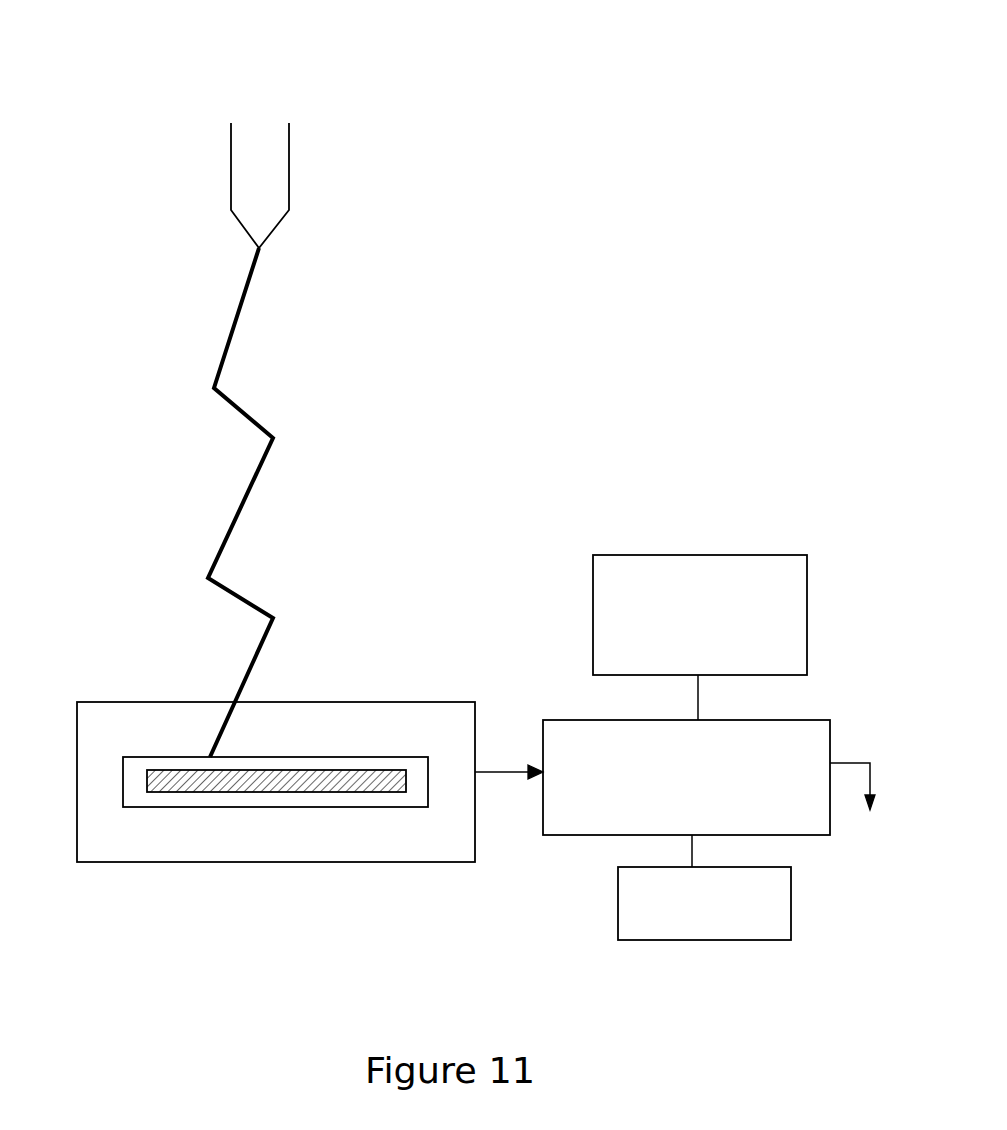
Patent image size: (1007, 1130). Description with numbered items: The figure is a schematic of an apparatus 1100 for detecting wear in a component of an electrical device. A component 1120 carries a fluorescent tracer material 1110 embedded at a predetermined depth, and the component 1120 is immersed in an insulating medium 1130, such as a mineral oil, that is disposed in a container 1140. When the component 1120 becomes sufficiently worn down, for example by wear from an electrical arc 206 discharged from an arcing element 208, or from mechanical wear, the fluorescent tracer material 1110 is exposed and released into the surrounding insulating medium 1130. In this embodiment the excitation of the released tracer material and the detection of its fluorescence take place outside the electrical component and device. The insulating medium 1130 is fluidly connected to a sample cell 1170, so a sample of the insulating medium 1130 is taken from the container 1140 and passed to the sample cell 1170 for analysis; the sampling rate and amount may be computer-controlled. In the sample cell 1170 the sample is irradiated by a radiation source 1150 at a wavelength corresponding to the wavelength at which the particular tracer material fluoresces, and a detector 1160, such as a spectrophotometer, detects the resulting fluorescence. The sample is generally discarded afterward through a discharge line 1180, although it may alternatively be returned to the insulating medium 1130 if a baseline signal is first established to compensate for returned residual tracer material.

The apparatus 1100 is at (505, 100).
The arcing element 208 is at (231, 172).
The electrical arc 206 is at (223, 363).
The container 1140 is at (312, 702).
The insulating medium 1130 is at (411, 725).
The component 1120 is at (238, 807).
The tracer material 1110 is at (147, 795).
The sample cell 1170 is at (760, 720).
The detector 1160 is at (648, 555).
The radiation source 1150 is at (722, 940).
The discharge line 1180 is at (845, 762).